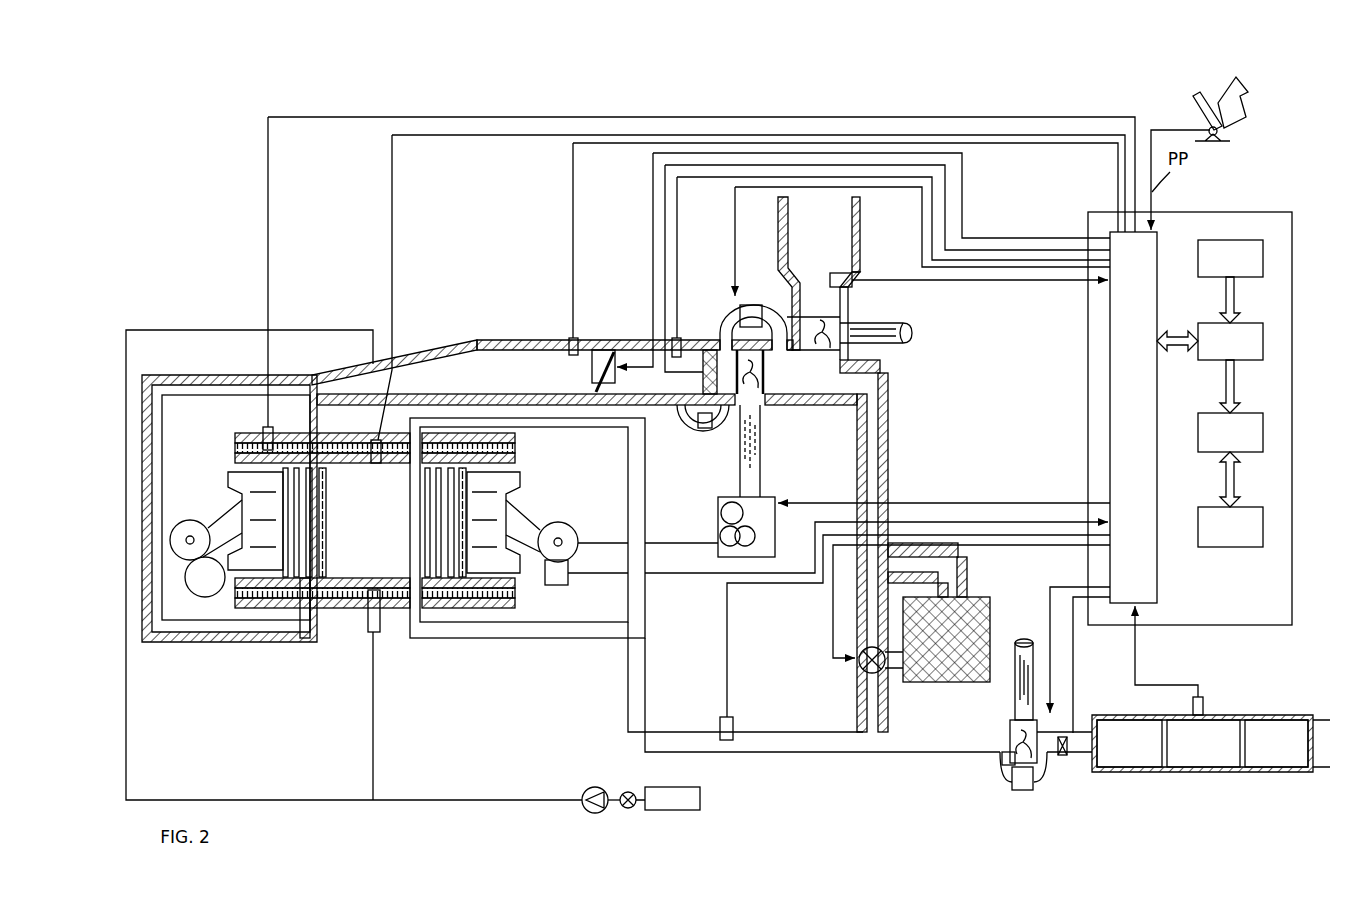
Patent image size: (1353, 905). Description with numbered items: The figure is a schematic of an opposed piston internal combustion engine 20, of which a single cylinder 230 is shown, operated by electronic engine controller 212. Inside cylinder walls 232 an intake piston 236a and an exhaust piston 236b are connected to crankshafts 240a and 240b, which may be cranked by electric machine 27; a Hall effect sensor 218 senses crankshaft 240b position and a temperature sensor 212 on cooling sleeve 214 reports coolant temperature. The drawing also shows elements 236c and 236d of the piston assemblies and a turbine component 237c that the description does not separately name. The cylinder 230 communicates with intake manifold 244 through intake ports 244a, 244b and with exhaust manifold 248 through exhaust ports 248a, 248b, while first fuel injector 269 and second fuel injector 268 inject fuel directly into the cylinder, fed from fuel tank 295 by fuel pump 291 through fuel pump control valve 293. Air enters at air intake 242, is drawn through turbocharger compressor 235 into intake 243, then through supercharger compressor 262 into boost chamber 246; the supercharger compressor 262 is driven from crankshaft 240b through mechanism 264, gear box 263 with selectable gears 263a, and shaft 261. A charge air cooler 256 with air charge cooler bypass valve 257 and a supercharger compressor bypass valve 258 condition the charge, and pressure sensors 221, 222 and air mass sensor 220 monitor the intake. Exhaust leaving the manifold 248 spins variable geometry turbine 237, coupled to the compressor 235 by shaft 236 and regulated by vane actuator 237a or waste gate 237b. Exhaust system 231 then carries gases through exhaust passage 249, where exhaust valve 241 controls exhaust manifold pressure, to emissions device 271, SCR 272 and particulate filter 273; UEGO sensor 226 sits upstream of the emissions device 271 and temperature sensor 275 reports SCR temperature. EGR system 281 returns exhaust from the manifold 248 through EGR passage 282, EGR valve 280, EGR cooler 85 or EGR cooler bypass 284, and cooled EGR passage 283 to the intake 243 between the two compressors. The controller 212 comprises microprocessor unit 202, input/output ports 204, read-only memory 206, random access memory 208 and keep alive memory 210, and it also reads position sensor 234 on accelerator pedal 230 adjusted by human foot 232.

The engine 20 is at (230, 326).
The electric machine 27 is at (205, 577).
The coolant passage 85 is at (913, 670).
The microprocessor unit 202 is at (1265, 348).
The input/output ports 204 is at (1158, 242).
The read-only memory 206 is at (1265, 264).
The random access memory 208 is at (1265, 433).
The keep alive memory 210 is at (1265, 524).
The electronic engine controller 212 is at (265, 432).
The cooling sleeve 214 is at (265, 466).
The Hall effect sensor 218 is at (560, 586).
The air mass sensor 220 is at (855, 278).
The pressure sensor 221 is at (567, 340).
The pressure sensor 222 is at (679, 336).
The universal exhaust gas oxygen sensor 226 is at (722, 717).
The cylinder 230 is at (305, 604).
The exhaust system 231 is at (886, 775).
The cylinder walls 232 is at (530, 466).
The position sensor 234 is at (1230, 138).
The turbocharger compressor 235 is at (840, 324).
The shaft 236 is at (870, 340).
The intake piston 236a is at (258, 502).
The exhaust piston 236b is at (490, 517).
The first stator plates 236c is at (337, 478).
The second stator plates 236d is at (440, 598).
The variable geometry turbine 237 is at (1008, 732).
The vane actuator 237a is at (1002, 762).
The waste gate 237b is at (1015, 720).
The aftertreatment housing 237c is at (1020, 792).
The crankshaft 240a is at (180, 560).
The crankshaft 240b is at (567, 525).
The exhaust gas sensor 241 is at (1063, 758).
The air intake 242 is at (922, 268).
The engine air intake 243 is at (524, 275).
The intake manifold 244 is at (552, 363).
The intake port 244a is at (303, 580).
The intake port 244b is at (307, 470).
The intake boost chamber 246 is at (887, 272).
The exhaust manifold 248 is at (548, 430).
The exhaust port 248a is at (418, 640).
The exhaust port 248b is at (418, 432).
The exhaust passage 249 is at (1076, 735).
The charge air cooler 256 is at (709, 350).
The air charge cooler bypass valve 257 is at (705, 428).
The supercharger compressor bypass valve 258 is at (618, 378).
The shaft 261 is at (740, 498).
The supercharger compressor 262 is at (612, 350).
The gear box 263 is at (718, 505).
The gears 263a is at (745, 512).
The mechanism 264 is at (612, 352).
The second fuel injector 268 is at (385, 432).
The first fuel injector 269 is at (370, 628).
The emissions device 271 is at (1211, 743).
The SCR 272 is at (1203, 743).
The particulate filter 273 is at (1276, 743).
The temperature sensor 275 is at (1204, 703).
The EGR valve 280 is at (860, 666).
The EGR system 281 is at (822, 641).
The EGR passage 282 is at (890, 470).
The cooled EGR passage 283 is at (958, 592).
The EGR cooler bypass 284 is at (855, 632).
The fuel pump 291 is at (598, 790).
The fuel pump control valve 293 is at (626, 808).
The fuel tank 295 is at (672, 798).